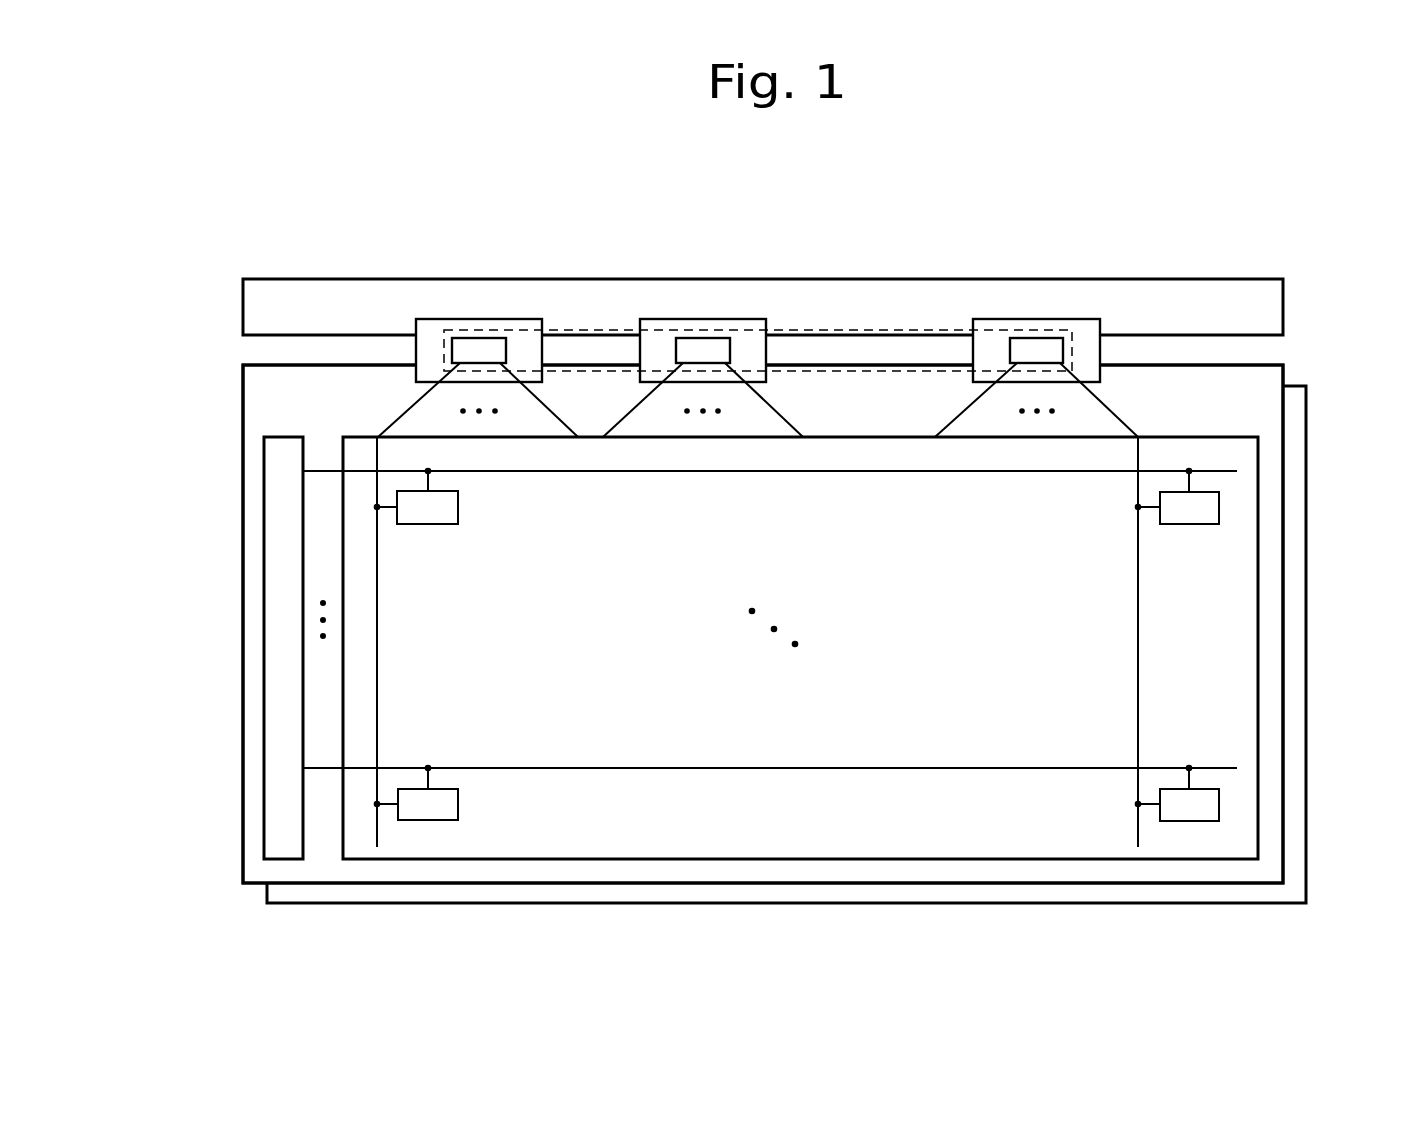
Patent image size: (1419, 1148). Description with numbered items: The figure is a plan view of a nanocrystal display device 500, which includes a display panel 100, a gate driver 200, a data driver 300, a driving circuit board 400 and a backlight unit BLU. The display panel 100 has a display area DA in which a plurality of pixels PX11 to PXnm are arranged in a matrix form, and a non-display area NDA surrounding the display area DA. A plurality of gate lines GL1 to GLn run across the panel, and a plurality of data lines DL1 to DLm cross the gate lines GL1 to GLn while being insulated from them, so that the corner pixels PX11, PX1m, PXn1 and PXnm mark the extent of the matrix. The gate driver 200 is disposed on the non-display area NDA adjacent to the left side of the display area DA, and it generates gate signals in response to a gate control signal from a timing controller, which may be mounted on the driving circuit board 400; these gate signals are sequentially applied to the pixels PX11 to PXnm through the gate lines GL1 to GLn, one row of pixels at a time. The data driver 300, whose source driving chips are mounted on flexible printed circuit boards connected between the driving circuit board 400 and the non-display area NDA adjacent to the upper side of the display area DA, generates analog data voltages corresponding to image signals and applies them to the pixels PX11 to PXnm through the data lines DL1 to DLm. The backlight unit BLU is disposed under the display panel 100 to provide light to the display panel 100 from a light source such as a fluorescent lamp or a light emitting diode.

The nanocrystal display device 500 is at (1216, 216).
The driving circuit board 400 is at (1285, 305).
The data driver 300 is at (857, 329).
The display panel 100 is at (1284, 612).
The gate driver 200 is at (262, 641).
The non-display area NDA is at (252, 512).
The display area DA is at (1259, 687).
The backlight unit BLU is at (1307, 517).
The first gate line GL1 is at (610, 473).
The n-th gate line GLn is at (620, 766).
The first data line DL1 is at (378, 643).
The m-th data line DLm is at (1137, 645).
The pixel PX11 is at (416, 496).
The pixel PX1m is at (1177, 496).
The pixel PXn1 is at (416, 792).
The pixel PXnm is at (1177, 793).